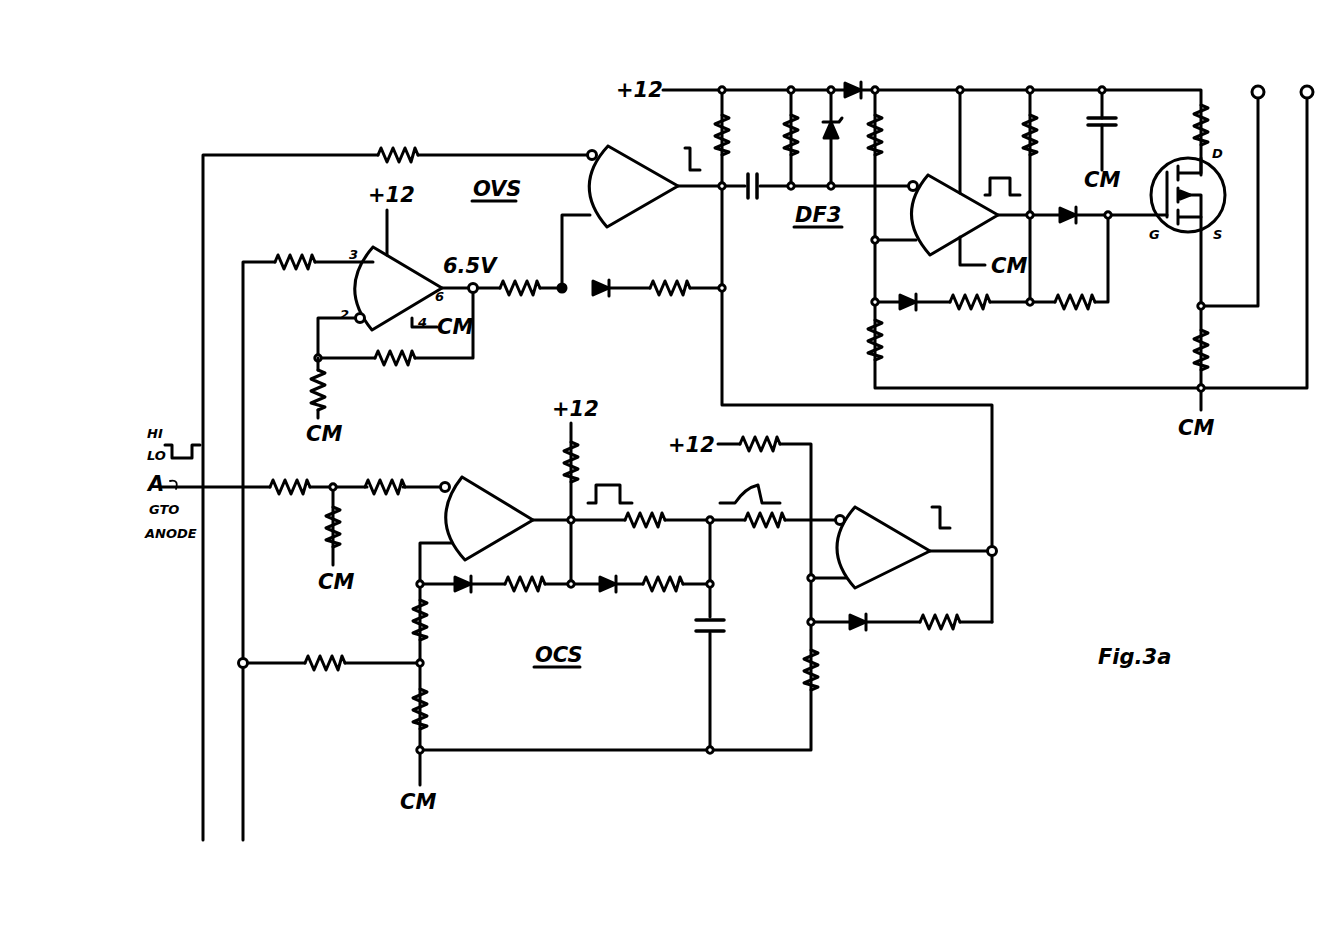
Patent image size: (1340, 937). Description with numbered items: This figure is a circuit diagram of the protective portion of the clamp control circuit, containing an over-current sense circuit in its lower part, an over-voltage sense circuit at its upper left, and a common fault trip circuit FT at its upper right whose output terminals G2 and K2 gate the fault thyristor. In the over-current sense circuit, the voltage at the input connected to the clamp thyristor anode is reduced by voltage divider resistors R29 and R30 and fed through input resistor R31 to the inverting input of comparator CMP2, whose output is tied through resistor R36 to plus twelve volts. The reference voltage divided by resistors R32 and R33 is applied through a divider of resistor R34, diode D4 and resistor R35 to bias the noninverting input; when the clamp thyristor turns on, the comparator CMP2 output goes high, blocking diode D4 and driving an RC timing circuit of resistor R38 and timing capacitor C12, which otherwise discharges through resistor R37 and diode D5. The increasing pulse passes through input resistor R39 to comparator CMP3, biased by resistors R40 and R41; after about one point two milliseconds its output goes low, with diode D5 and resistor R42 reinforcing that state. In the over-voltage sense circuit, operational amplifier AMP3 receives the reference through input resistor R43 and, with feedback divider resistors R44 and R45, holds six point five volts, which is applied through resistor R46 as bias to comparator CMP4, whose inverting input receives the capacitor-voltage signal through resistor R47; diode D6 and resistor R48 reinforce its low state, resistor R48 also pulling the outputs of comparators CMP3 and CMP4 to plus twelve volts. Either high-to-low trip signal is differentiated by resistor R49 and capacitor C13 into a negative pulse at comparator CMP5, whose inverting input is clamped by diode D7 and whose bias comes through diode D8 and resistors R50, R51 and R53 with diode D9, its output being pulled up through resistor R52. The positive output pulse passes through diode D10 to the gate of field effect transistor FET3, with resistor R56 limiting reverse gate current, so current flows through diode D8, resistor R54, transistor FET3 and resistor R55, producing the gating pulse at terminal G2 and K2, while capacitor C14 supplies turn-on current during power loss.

The resistor R47 is at (402, 146).
The input resistor R43 is at (298, 256).
The operational amplifier AMP3 is at (428, 248).
The voltage divider resistor R44 is at (400, 366).
The voltage divider resistor R45 is at (332, 398).
The voltage divider resistor R29 is at (300, 480).
The input resistor R31 is at (370, 480).
The voltage divider resistor R30 is at (325, 517).
The voltage divider resistor R32 is at (330, 656).
The resistor R34 is at (410, 630).
The voltage divider resistor R33 is at (410, 712).
The comparator CMP2 is at (512, 473).
The resistor R36 is at (578, 456).
The resistor R38 is at (648, 530).
The input resistor R39 is at (768, 530).
The diode D4 is at (464, 592).
The resistor R35 is at (535, 568).
The diode D5 is at (610, 594).
The resistor R37 is at (674, 594).
The timing capacitor C12 is at (727, 629).
The voltage divider resistor R40 is at (754, 436).
The comparator CMP3 is at (906, 508).
The voltage divider resistor R41 is at (822, 670).
The resistor R42 is at (938, 632).
The resistor R46 is at (514, 300).
The diode D6 is at (610, 278).
The resistor R48 is at (680, 278).
The comparator CMP4 is at (652, 138).
The capacitor C13 is at (752, 202).
The resistor R49 is at (776, 132).
The diode D7 is at (824, 140).
The diode D8 is at (860, 80).
The voltage divider resistor R50 is at (884, 124).
The voltage divider resistor R51 is at (866, 344).
The comparator CMP5 is at (952, 156).
The diode D9 is at (916, 272).
The voltage divider resistor R53 is at (984, 312).
The resistor R56 is at (1084, 312).
The resistor R52 is at (1022, 138).
The diode D10 is at (1070, 210).
The capacitor C14 is at (1082, 124).
The resistor R54 is at (1192, 134).
The field effect transistor FET3 is at (1158, 180).
The resistor R55 is at (1210, 352).
The output terminal G2 is at (1256, 79).
The output terminal K2 is at (1305, 79).
The fault trip circuit FT is at (951, 73).